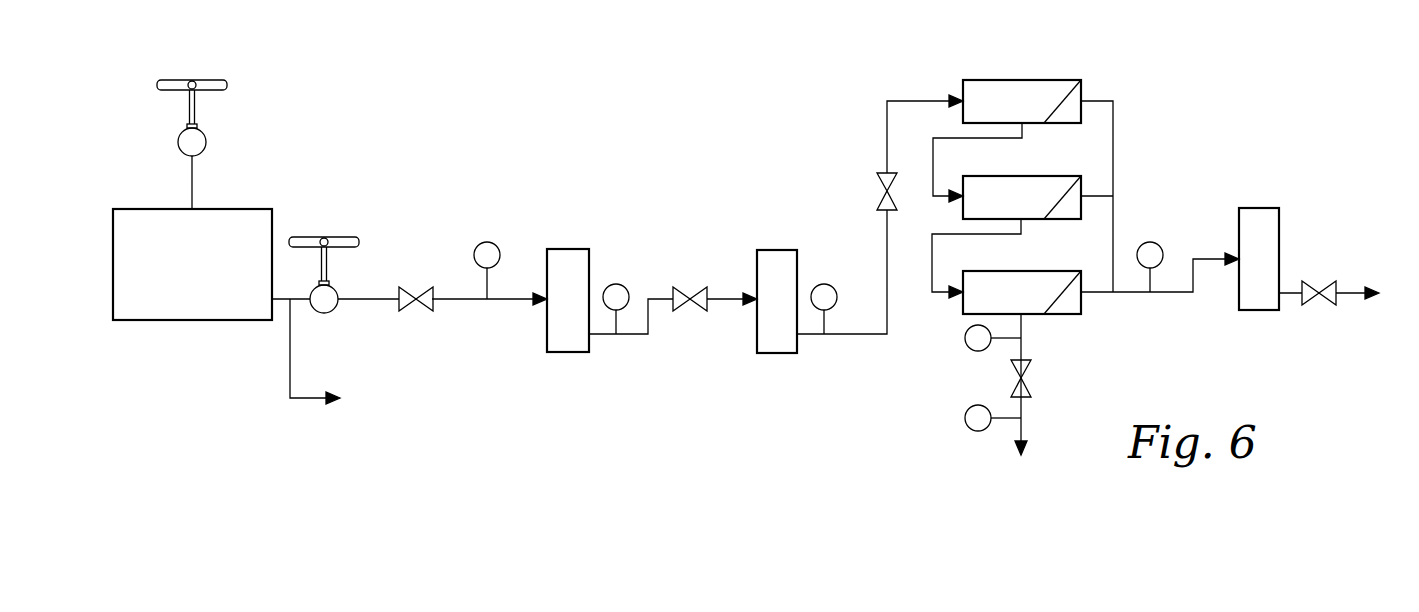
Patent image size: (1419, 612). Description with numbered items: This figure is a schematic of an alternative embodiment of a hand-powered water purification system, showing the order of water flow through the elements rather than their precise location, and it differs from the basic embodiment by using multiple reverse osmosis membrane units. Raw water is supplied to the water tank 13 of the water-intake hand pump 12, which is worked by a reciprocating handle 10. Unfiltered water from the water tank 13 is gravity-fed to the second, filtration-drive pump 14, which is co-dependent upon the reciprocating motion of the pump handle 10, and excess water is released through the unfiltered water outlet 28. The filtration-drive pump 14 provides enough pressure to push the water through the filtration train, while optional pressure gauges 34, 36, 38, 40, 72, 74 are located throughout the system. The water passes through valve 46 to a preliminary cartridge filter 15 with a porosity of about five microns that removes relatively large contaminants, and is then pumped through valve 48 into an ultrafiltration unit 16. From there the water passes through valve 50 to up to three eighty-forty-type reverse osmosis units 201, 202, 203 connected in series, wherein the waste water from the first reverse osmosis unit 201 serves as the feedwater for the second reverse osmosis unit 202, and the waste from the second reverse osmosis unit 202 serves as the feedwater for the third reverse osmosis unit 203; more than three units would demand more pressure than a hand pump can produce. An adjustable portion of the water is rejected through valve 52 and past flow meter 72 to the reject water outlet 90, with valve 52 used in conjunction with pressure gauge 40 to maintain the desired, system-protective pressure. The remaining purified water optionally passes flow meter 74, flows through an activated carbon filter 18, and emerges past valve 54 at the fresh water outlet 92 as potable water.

The reciprocating handle 10 is at (196, 104).
The hand pump 12 is at (178, 142).
The water tank 13 is at (146, 318).
The filtration-drive pump 14 is at (331, 311).
The preliminary cartridge filter 15 is at (573, 346).
The ultrafiltration unit 16 is at (781, 347).
The activated carbon filter 18 is at (1258, 208).
The unfiltered water outlet 28 is at (312, 398).
The pressure gauge 34 is at (487, 242).
The pressure gauge 36 is at (617, 284).
The pressure gauge 38 is at (825, 284).
The pressure gauge 40 is at (970, 349).
The valve 46 is at (416, 305).
The valve 48 is at (690, 305).
The valve 50 is at (880, 183).
The valve 52 is at (1025, 378).
The valve 54 is at (1321, 298).
The flow meter 72 is at (970, 430).
The flow meter 74 is at (1151, 242).
The reject water outlet 90 is at (1030, 448).
The fresh water outlet 92 is at (1362, 290).
The first reverse osmosis unit 201 is at (1062, 80).
The second reverse osmosis unit 202 is at (1062, 176).
The third reverse osmosis unit 203 is at (1062, 271).